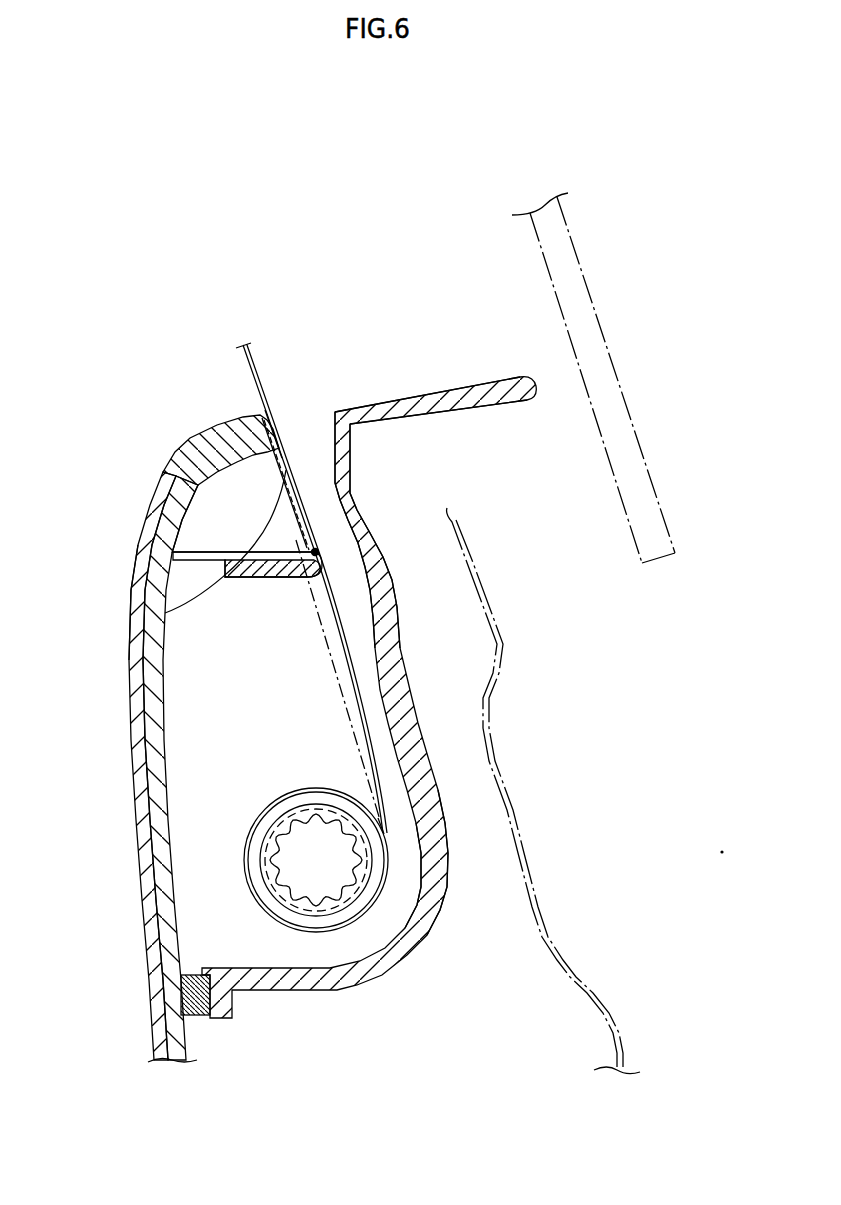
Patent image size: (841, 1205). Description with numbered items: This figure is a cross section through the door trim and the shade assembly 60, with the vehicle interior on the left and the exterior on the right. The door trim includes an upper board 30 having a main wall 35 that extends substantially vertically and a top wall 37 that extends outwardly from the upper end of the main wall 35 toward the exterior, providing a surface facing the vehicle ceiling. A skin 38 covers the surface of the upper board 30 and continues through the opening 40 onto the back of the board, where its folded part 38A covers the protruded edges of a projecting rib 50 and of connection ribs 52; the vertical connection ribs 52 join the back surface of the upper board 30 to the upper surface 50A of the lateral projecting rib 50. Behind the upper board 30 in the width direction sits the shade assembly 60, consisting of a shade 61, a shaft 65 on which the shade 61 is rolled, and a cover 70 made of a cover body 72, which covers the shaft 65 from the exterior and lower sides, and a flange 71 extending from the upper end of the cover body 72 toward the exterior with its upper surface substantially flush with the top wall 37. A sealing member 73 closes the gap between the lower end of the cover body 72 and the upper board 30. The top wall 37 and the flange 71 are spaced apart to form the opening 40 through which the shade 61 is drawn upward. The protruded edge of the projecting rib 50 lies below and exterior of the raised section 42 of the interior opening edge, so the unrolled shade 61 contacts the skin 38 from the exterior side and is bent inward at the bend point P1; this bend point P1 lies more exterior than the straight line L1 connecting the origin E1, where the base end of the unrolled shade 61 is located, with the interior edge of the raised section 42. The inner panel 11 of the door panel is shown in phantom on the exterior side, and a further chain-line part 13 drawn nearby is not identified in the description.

The inner panel 11 is at (560, 952).
The window glass 13 is at (603, 327).
The upper board 30 is at (167, 730).
The main wall 35 is at (160, 867).
The top wall 37 is at (231, 453).
The skin 38 is at (131, 772).
The folded part 38A is at (165, 613).
The opening 40 is at (268, 445).
The raised section 42 is at (272, 428).
The projecting rib 50 is at (248, 559).
The upper surface 50A is at (233, 552).
The connection rib 52 is at (236, 512).
The shade assembly 60 is at (369, 697).
The shade 61 is at (324, 587).
The shaft 65 is at (337, 878).
The cover 70 is at (415, 968).
The flange 71 is at (512, 385).
The cover body 72 is at (434, 860).
The sealing member 73 is at (198, 1015).
The origin E1 is at (382, 833).
The straight line L1 is at (320, 618).
The bend point P1 is at (316, 552).